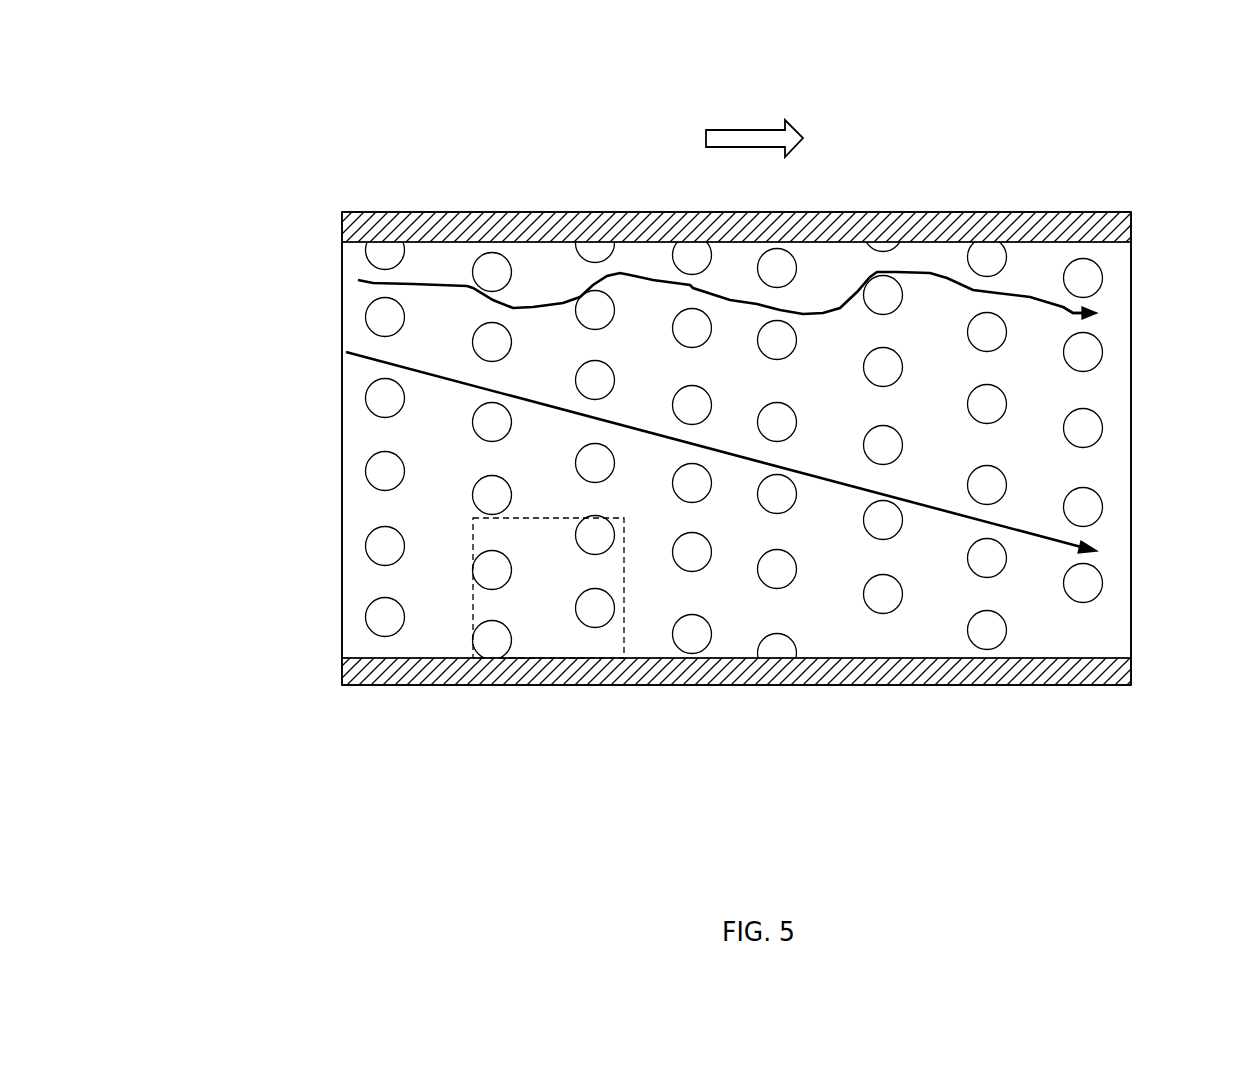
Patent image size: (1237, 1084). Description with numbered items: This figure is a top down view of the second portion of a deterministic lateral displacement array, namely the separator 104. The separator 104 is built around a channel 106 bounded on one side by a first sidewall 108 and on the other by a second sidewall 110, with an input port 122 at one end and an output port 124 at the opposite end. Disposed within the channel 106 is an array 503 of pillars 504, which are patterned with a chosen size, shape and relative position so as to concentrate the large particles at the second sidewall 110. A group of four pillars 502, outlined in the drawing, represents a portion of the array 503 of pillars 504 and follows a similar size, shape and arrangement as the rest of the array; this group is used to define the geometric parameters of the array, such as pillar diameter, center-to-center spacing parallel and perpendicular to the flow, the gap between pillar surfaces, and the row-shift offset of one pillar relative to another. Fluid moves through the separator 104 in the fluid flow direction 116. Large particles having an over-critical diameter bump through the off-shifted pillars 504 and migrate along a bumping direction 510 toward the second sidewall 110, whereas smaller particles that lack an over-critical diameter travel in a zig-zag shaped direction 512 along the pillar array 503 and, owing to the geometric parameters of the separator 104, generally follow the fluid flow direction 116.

The separator 104 is at (1074, 169).
The channel 106 is at (367, 432).
The first sidewall 108 is at (342, 225).
The second sidewall 110 is at (342, 672).
The fluid flow direction 116 is at (785, 122).
The input port 122 is at (342, 450).
The output port 124 is at (1133, 447).
The four pillars 502 is at (470, 593).
The array 503 is at (345, 303).
The pillars 504 is at (365, 615).
The bumping direction 510 is at (1097, 552).
The zig-zag shaped direction 512 is at (1098, 315).